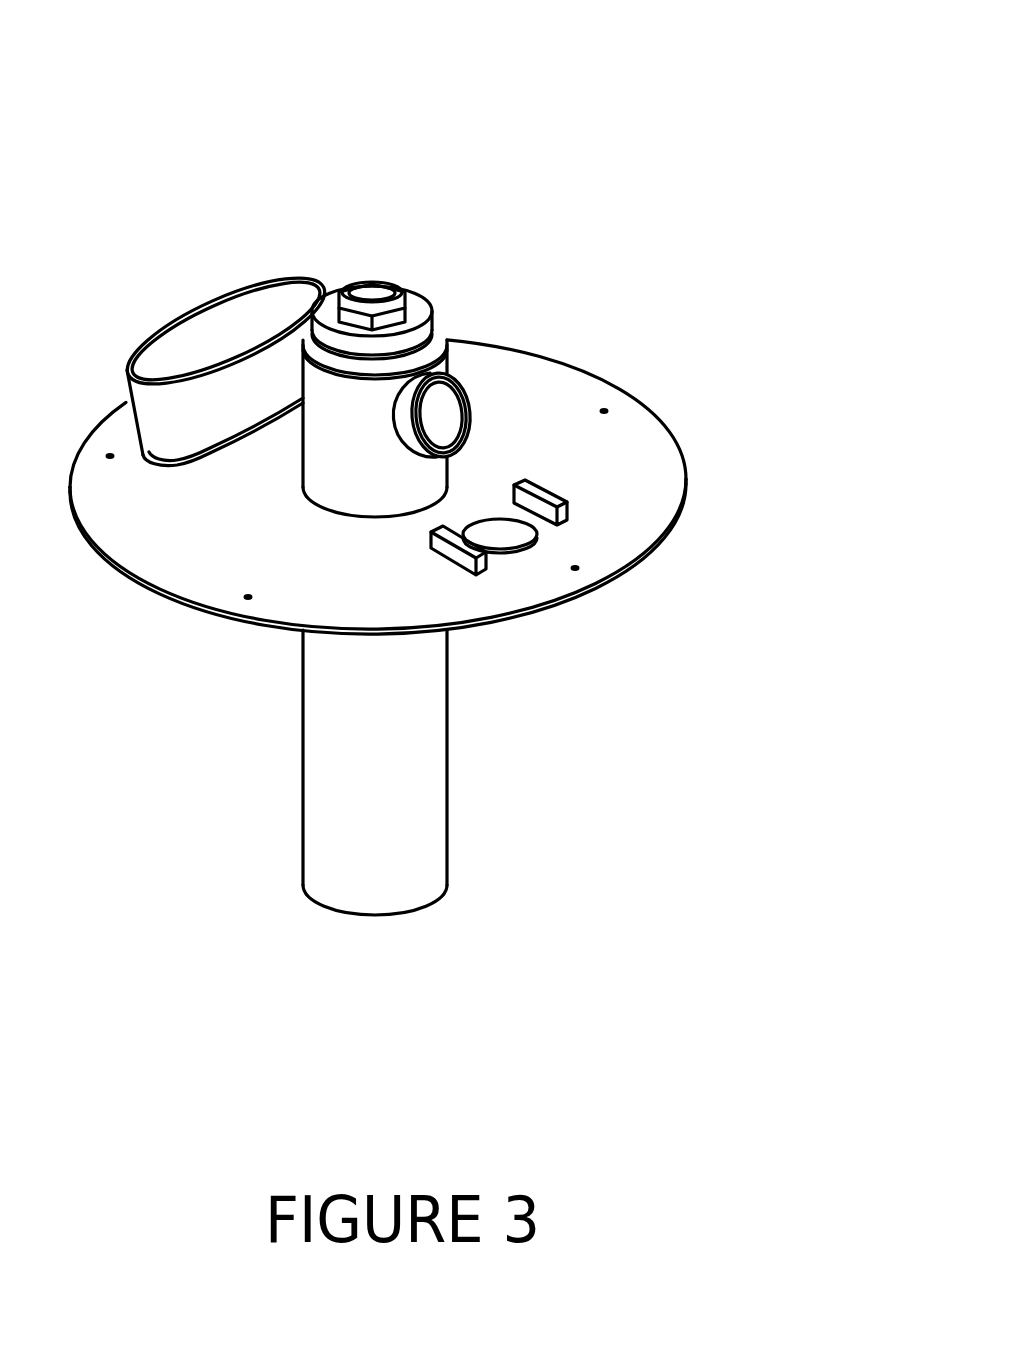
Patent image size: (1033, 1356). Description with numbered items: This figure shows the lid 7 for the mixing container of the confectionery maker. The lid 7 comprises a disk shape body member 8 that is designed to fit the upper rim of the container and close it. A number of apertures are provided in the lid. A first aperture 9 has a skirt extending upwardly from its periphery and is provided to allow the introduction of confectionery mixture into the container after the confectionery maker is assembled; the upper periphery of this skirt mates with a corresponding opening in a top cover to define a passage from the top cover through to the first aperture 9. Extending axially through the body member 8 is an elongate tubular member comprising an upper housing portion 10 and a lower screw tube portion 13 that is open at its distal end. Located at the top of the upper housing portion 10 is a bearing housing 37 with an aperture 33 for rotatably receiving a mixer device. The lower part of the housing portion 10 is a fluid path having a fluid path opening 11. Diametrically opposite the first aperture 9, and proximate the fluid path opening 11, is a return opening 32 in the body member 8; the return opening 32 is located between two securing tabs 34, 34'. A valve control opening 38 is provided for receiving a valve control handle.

The lid 7 is at (150, 147).
The disk shape body member 8 is at (555, 384).
The first aperture 9 is at (250, 320).
The upper housing portion 10 is at (337, 445).
The fluid path opening 11 is at (452, 417).
The lower screw tube portion 13 is at (393, 867).
The return opening 32 is at (500, 537).
The aperture 33 is at (390, 278).
The securing tab 34 is at (525, 665).
The securing tab 34' is at (698, 531).
The bearing housing 37 is at (390, 358).
The valve control opening 38 is at (375, 488).